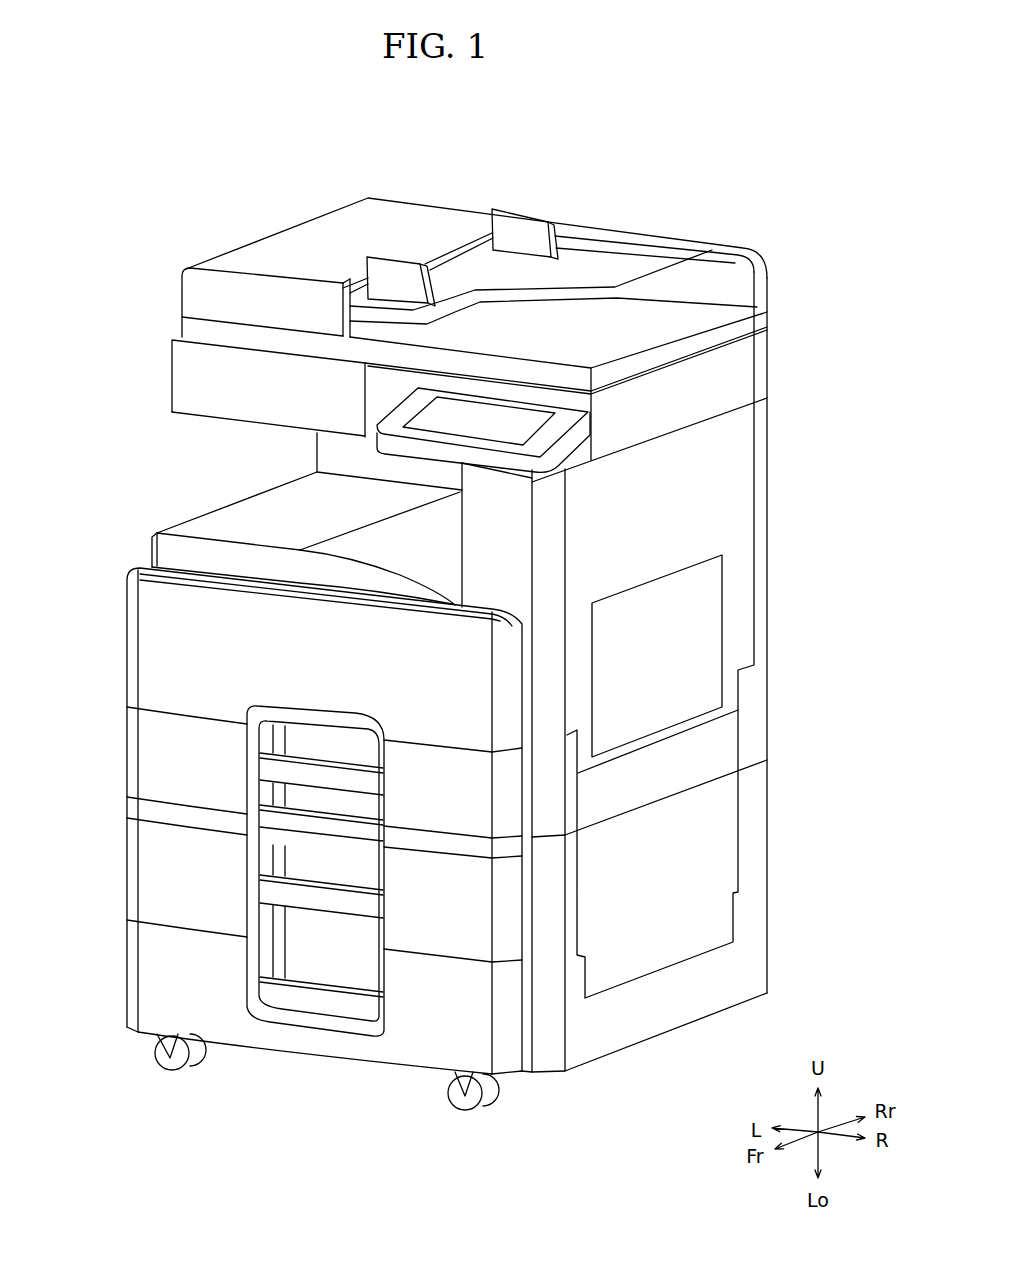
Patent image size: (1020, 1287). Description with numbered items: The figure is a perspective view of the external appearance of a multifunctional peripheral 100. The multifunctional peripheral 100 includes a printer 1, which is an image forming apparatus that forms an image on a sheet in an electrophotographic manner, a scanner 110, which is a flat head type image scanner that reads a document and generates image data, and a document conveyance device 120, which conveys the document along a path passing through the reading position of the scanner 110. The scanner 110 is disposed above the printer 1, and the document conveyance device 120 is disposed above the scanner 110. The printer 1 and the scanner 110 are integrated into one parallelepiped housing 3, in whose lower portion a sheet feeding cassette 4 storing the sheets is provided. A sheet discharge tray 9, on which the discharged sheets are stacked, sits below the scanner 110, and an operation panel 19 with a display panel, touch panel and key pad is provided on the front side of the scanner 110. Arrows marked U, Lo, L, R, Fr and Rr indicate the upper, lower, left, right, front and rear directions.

The multifunctional peripheral 100 is at (761, 173).
The document conveyance device 120 is at (776, 279).
The scanner 110 is at (776, 357).
The printer 1 is at (776, 425).
The housing 3 is at (767, 488).
The sheet discharge tray 9 is at (228, 522).
The operation panel 19 is at (370, 443).
The sheet feeding cassette 4 is at (127, 748).